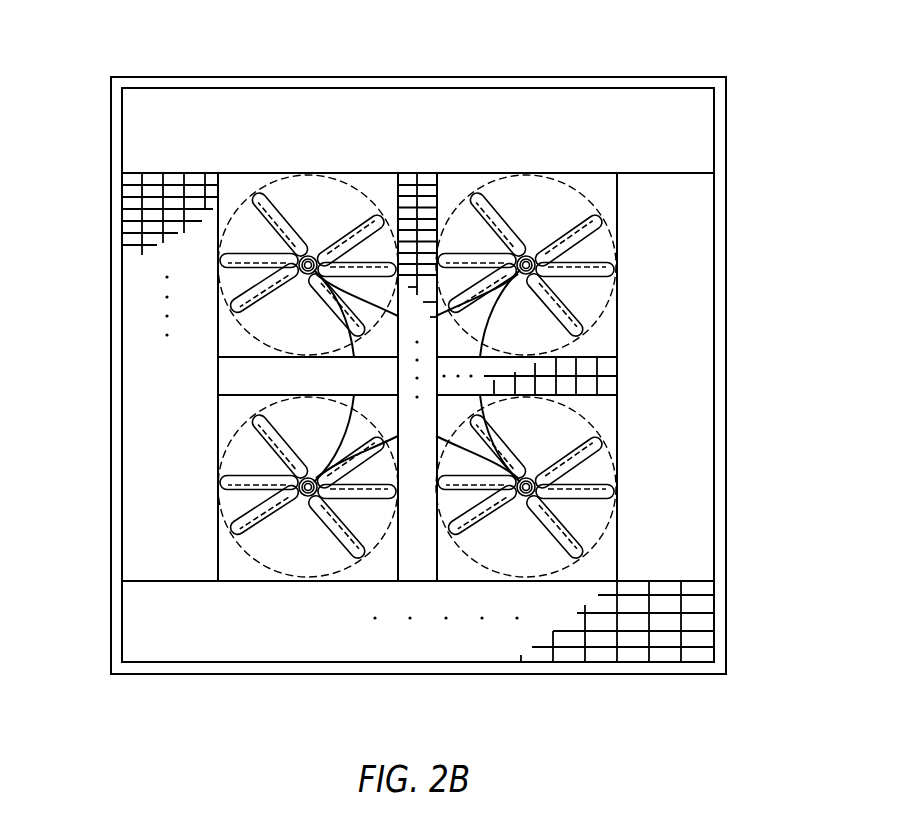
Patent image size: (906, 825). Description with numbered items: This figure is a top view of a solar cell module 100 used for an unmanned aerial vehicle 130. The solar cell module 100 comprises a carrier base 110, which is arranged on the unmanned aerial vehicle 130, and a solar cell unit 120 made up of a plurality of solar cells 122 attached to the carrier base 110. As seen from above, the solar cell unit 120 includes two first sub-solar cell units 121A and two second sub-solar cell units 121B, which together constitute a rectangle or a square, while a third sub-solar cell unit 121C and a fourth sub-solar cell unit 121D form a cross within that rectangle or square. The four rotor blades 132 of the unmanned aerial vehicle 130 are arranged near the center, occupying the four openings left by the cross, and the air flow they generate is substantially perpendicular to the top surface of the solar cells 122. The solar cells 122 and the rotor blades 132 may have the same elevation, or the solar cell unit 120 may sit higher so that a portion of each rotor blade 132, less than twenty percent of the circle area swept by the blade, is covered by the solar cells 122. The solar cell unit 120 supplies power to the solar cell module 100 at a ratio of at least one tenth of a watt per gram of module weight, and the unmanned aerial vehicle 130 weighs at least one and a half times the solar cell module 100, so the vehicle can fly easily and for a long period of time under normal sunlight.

The solar cell module 100 is at (215, 42).
The carrier base 110 is at (322, 80).
The solar cell unit 120 is at (604, 115).
The first sub-solar cell unit 121A is at (530, 105).
The second sub-solar cell unit 121B is at (138, 302).
The third sub-solar cell unit 121C is at (404, 190).
The fourth sub-solar cell unit 121D is at (235, 378).
The solar cells 122 is at (635, 641).
The unmanned aerial vehicle 130 is at (382, 410).
The rotor blades 132 is at (252, 490).